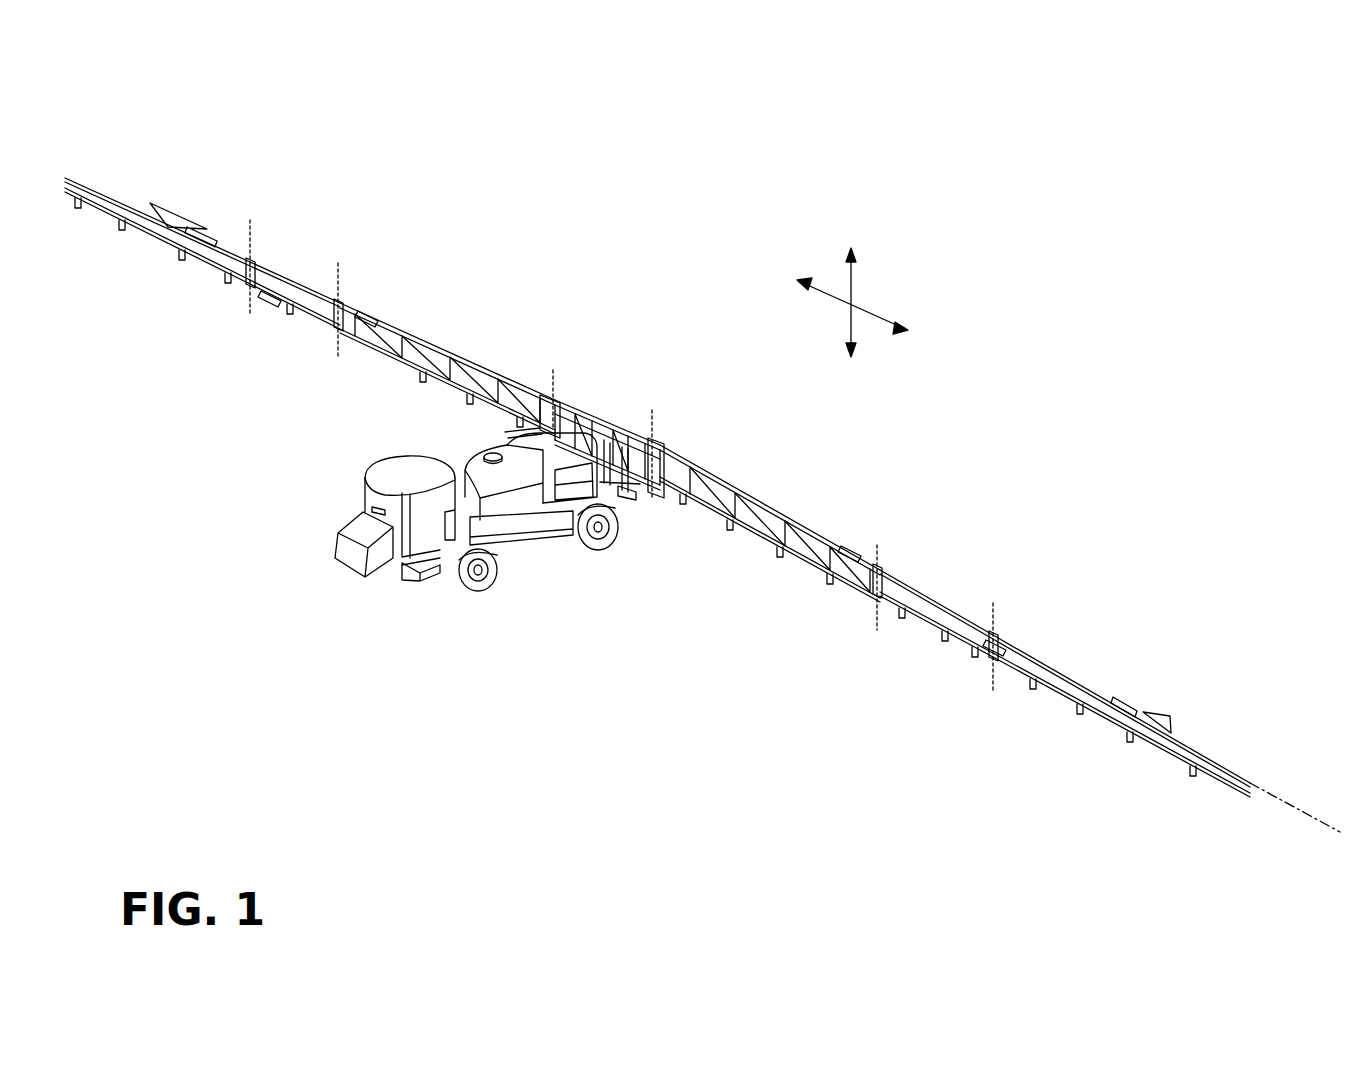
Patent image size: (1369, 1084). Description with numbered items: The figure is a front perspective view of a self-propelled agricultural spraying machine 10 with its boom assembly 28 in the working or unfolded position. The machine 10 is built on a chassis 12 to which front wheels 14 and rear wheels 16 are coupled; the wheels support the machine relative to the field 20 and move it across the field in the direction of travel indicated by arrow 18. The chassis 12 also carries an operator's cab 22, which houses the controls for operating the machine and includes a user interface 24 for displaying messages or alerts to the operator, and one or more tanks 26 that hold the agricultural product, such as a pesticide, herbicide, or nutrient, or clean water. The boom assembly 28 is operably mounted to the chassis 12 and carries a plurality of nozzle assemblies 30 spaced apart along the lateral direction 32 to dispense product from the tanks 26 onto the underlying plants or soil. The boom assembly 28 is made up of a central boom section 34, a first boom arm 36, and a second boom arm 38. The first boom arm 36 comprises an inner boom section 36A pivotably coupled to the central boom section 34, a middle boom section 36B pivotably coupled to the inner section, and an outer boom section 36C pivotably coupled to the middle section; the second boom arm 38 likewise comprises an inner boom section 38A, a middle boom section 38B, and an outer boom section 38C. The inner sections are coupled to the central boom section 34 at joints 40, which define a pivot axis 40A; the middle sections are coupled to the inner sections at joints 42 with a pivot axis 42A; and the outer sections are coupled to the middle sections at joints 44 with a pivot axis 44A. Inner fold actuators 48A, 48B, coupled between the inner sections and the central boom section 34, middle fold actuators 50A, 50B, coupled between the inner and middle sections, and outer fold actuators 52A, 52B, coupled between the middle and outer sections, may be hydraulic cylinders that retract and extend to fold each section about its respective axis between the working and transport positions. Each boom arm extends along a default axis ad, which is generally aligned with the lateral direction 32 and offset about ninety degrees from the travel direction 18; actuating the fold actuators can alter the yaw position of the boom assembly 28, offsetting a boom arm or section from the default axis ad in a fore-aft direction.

The machine 10 is at (150, 147).
The chassis 12 is at (523, 540).
The front wheels 14 is at (487, 590).
The rear wheels 16 is at (600, 550).
The direction of travel 18 is at (241, 607).
The field 20 is at (525, 731).
The operator's cab 22 is at (387, 468).
The user interface 24 is at (368, 505).
The tank 26 is at (458, 458).
The boom assembly 28 is at (926, 494).
The nozzle assemblies 30 is at (297, 328).
The lateral direction 32 is at (868, 312).
The central boom section 34 is at (616, 408).
The first (left) boom arm 36 is at (955, 602).
The left inner boom section 36A is at (763, 504).
The left middle boom section 36B is at (942, 606).
The left outer boom section 36C is at (1073, 681).
The second (right) boom arm 38 is at (310, 284).
The right inner boom section 38A is at (447, 351).
The right middle boom section 38B is at (297, 283).
The right outer boom section 38C is at (213, 243).
The joints 40 is at (580, 393).
The pivot axis 40A is at (553, 370).
The joints 42 is at (355, 285).
The pivot axis 42A is at (333, 350).
The joints 44 is at (267, 262).
The pivot axis 44A is at (247, 297).
The inner fold actuator 48A is at (627, 487).
The inner fold actuator 48B is at (530, 430).
The middle fold actuator 50A is at (847, 548).
The middle fold actuator 50B is at (368, 314).
The outer fold actuator 52A is at (988, 660).
The outer fold actuator 52B is at (265, 296).
The default axis ad is at (1292, 805).